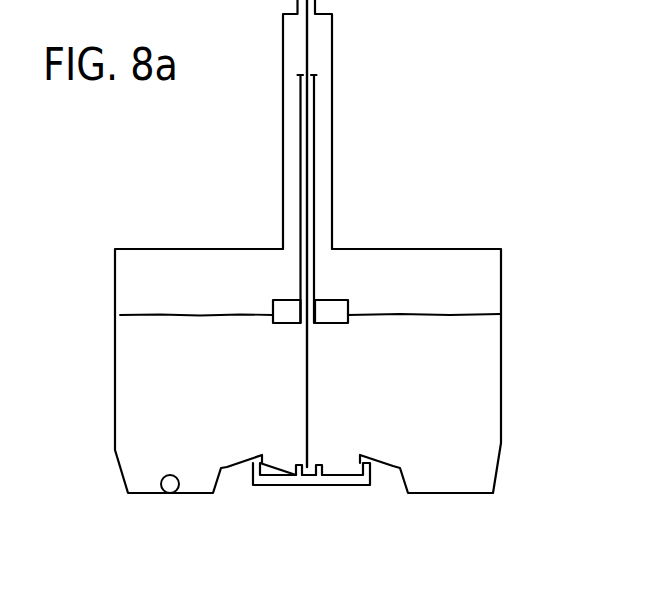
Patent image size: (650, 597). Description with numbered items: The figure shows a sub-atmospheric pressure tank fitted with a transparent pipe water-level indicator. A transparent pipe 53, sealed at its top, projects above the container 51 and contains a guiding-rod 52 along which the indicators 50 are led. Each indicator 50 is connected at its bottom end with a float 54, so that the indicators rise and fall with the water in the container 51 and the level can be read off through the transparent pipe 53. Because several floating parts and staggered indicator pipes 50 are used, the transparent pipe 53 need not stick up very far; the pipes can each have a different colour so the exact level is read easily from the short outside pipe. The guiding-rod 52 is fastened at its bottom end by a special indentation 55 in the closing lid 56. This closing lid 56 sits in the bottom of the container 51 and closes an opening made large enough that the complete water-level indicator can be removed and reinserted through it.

The indicator 50 is at (315, 172).
The container 51 is at (501, 283).
The guiding-rod 52 is at (305, 57).
The transparent pipe 53 is at (332, 33).
The float 54 is at (330, 306).
The indentation 55 is at (311, 467).
The closing lid 56 is at (315, 485).